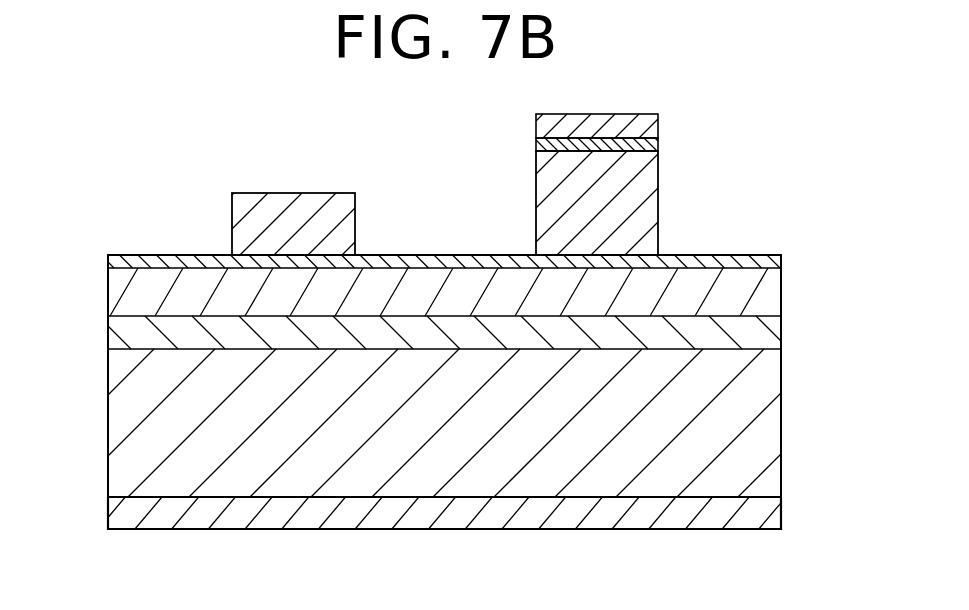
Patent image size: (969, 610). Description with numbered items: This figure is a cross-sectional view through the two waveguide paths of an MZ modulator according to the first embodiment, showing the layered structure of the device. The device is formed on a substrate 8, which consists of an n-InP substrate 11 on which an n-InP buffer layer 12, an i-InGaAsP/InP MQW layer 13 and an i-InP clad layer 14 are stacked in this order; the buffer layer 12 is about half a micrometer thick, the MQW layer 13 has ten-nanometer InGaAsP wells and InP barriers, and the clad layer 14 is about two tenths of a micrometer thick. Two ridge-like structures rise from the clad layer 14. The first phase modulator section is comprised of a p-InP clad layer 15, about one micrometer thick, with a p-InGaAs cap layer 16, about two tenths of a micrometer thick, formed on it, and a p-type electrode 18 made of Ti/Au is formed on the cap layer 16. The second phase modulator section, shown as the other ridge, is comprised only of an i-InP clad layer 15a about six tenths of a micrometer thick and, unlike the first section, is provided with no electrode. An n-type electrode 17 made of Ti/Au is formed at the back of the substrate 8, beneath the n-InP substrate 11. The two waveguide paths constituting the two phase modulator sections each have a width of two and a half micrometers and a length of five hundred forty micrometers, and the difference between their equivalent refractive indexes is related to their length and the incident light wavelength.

The substrate 8 is at (90, 253).
The n-InP substrate 11 is at (776, 431).
The n-InP buffer layer 12 is at (778, 330).
The i-InGaAsP/InP MQW layer 13 is at (778, 276).
The i-InP clad layer 14 is at (782, 257).
The p-InP clad layer 15 is at (655, 180).
The i-InP clad layer 15a is at (325, 197).
The p-InGaAs cap layer 16 is at (659, 144).
The n-type electrode 17 is at (776, 505).
The p-type electrode 18 is at (658, 115).